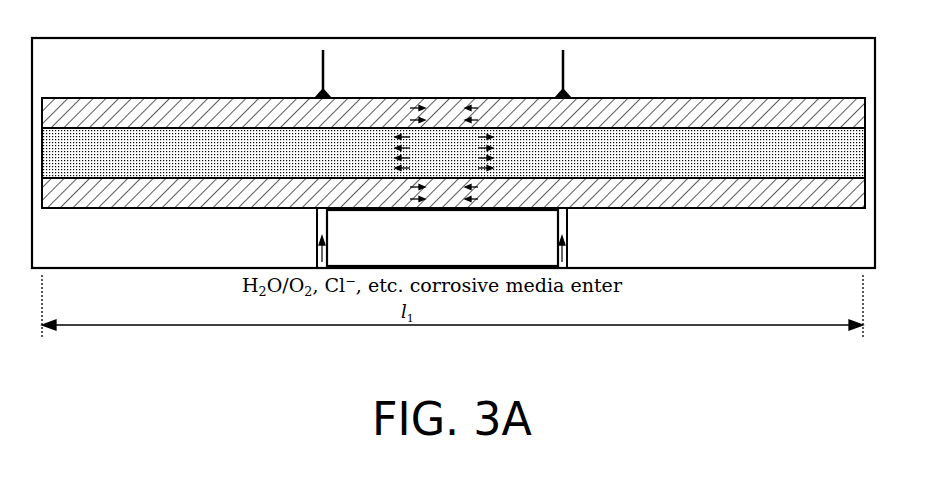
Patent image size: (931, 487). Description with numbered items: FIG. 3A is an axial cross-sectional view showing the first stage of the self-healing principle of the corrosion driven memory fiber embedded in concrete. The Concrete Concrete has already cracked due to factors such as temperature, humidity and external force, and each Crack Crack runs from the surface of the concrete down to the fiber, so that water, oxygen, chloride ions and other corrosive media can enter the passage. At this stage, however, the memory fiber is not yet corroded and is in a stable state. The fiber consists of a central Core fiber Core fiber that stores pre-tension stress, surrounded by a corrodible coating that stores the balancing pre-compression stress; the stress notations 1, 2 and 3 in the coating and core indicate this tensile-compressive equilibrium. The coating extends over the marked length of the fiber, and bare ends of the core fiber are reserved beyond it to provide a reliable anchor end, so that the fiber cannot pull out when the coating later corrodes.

The concrete Concrete is at (238, 63).
The core fiber Core fiber is at (453, 153).
The crack Crack is at (556, 76).
The coating stress (top) 1 is at (444, 114).
The fiber stress 2 is at (444, 154).
The coating stress (bottom) 3 is at (444, 193).